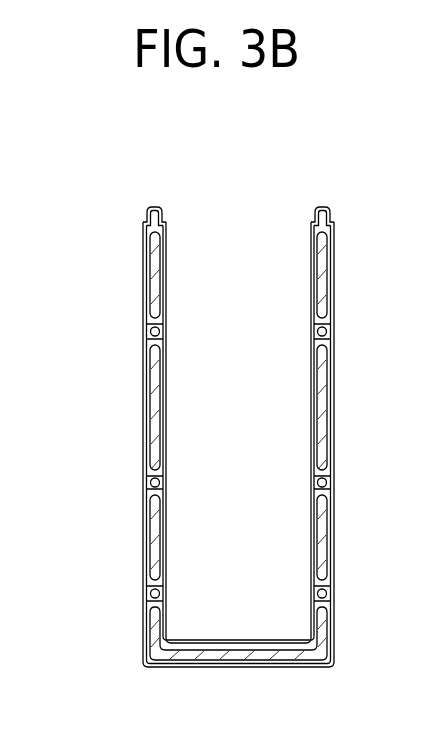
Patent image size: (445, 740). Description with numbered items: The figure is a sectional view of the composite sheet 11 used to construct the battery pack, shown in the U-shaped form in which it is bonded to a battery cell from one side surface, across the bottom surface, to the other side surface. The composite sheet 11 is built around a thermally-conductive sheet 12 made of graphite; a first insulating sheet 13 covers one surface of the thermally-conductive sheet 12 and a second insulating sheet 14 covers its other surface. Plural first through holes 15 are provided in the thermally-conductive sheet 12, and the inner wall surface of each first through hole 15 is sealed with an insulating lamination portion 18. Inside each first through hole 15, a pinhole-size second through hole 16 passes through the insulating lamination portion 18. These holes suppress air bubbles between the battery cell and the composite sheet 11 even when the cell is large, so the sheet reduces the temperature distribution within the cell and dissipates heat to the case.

The composite sheet 11 is at (332, 190).
The thermally-conductive sheet 12 is at (322, 273).
The first insulating sheet 13 is at (310, 293).
The second insulating sheet 14 is at (335, 420).
The first through hole 15 is at (328, 605).
The second through hole 16 is at (328, 487).
The insulating lamination portion 18 is at (147, 493).